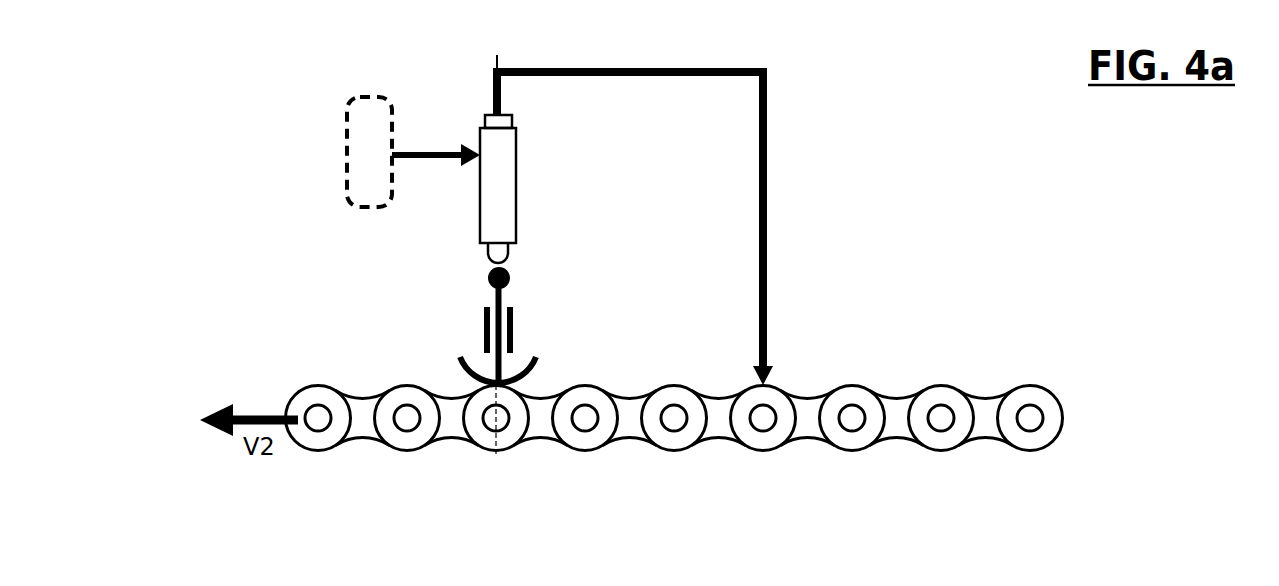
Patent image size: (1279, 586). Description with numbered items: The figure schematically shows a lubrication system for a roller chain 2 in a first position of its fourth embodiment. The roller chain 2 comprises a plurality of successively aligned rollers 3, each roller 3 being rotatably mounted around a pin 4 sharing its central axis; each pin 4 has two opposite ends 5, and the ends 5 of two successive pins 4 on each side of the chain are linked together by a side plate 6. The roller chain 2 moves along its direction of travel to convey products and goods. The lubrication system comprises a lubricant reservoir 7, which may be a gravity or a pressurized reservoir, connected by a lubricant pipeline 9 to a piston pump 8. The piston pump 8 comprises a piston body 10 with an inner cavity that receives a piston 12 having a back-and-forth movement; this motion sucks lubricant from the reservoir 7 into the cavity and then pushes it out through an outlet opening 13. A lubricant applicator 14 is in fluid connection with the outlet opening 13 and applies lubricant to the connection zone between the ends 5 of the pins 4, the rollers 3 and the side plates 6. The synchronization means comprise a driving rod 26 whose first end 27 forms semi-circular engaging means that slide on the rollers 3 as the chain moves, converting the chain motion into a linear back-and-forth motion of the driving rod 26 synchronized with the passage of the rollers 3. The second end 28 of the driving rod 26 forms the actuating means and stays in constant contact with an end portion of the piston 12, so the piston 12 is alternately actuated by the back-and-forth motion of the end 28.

The roller chain 2 is at (720, 420).
The roller 3 is at (848, 444).
The pin 4 is at (943, 424).
The end 5 is at (933, 400).
The side plate 6 is at (988, 435).
The lubricant reservoir 7 is at (357, 100).
The piston pump 8 is at (524, 190).
The lubricant pipeline 9 is at (425, 150).
The piston body 10 is at (491, 220).
The piston 12 is at (511, 258).
The outlet opening 13 is at (503, 115).
The lubricant applicator 14 is at (778, 283).
The driving rod 26 is at (514, 296).
The first end 27 is at (467, 377).
The second end 28 is at (488, 280).